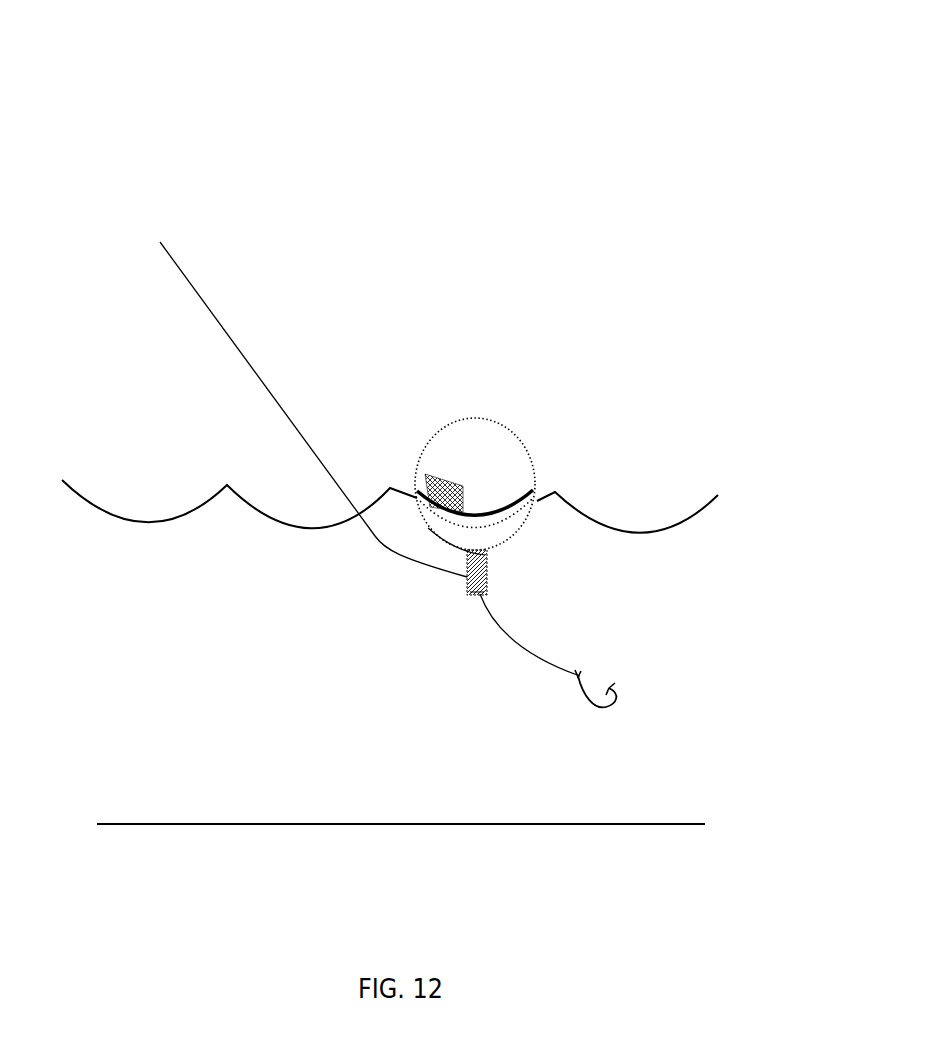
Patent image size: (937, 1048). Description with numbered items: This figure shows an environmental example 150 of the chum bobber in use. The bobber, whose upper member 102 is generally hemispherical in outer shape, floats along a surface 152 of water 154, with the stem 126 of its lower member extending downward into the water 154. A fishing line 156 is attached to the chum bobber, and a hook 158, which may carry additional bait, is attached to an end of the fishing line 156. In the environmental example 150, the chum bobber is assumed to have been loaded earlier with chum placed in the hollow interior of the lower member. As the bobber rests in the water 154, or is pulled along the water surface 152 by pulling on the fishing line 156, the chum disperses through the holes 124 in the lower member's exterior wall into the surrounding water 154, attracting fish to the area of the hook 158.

The environmental example 150 is at (93, 86).
The upper member 102 is at (430, 406).
The holes 124 is at (490, 550).
The stem 126 is at (470, 594).
The surface of water 152 is at (676, 527).
The water 154 is at (353, 706).
The fishing line 156 is at (195, 288).
The hook 158 is at (630, 675).